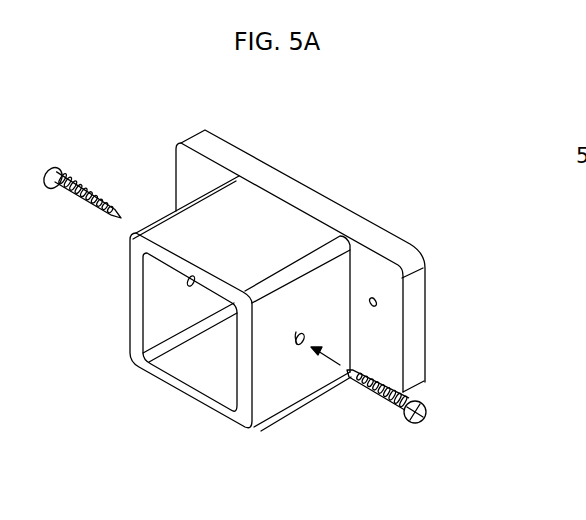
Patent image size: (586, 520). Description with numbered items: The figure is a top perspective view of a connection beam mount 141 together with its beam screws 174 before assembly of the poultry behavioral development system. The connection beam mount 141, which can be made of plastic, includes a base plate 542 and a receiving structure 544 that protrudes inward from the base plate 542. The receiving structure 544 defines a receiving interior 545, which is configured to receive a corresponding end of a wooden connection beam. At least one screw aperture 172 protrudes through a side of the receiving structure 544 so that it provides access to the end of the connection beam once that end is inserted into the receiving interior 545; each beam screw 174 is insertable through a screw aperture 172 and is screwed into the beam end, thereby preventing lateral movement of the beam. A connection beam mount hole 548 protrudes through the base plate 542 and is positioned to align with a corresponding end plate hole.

The connection beam mount 141 is at (170, 141).
The base plate 542 is at (323, 198).
The receiving structure 544 is at (167, 389).
The receiving interior 545 is at (213, 365).
The first connection beam mount hole 548 is at (384, 303).
The screw aperture 172 is at (187, 282).
The beam screw 174 is at (52, 198).